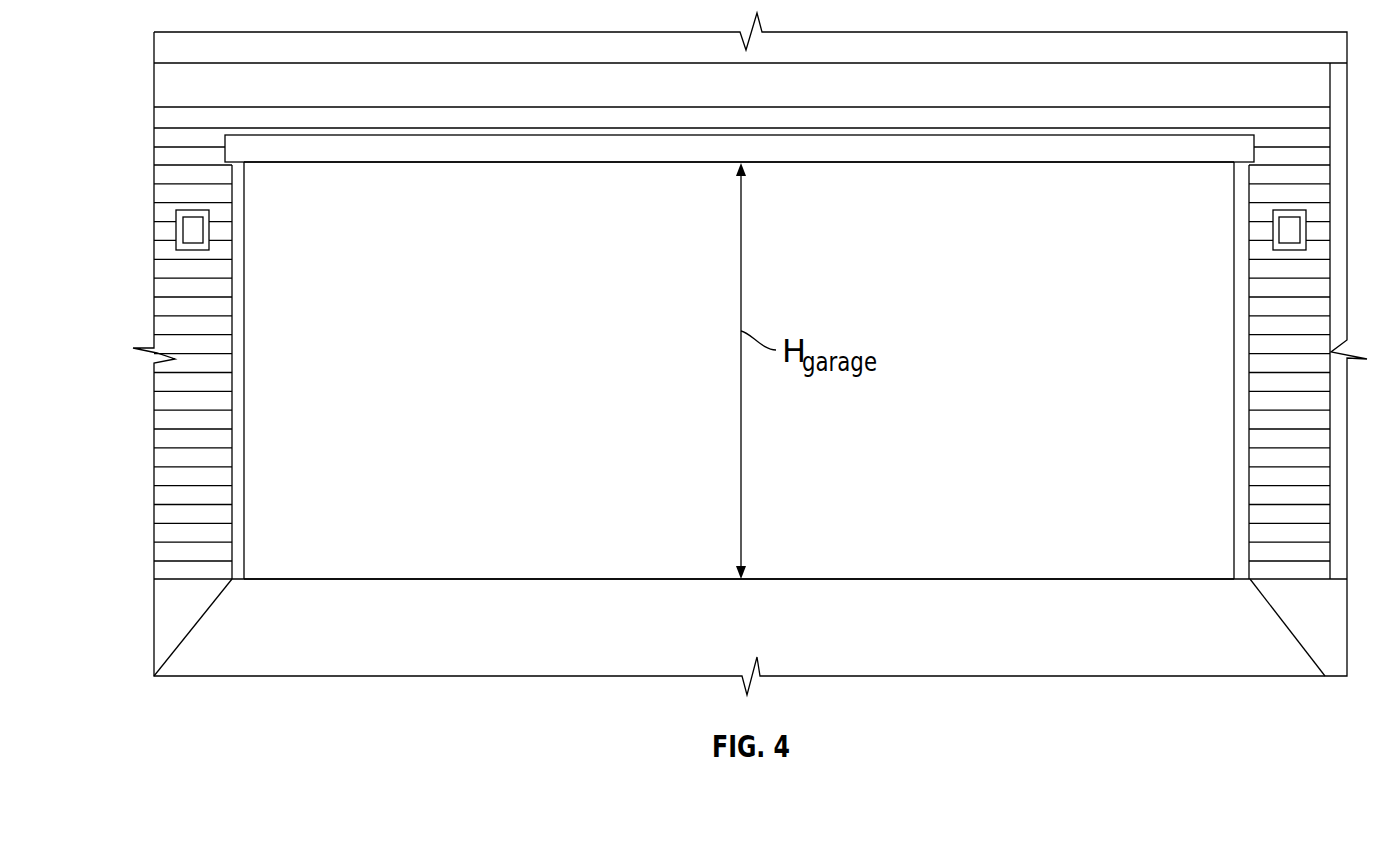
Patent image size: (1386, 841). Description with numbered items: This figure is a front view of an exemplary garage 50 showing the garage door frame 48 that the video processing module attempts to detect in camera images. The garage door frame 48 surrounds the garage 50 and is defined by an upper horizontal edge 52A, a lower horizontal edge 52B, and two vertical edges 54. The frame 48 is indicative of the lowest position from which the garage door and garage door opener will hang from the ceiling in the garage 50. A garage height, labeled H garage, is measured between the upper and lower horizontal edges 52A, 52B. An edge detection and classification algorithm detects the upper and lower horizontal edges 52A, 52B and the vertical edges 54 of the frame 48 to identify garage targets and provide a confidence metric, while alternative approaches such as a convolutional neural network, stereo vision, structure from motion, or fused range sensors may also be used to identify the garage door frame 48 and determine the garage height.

The garage door frame 48 is at (911, 147).
The garage 50 is at (818, 155).
The upper horizontal edge 52A is at (1025, 163).
The lower horizontal edge 52B is at (1025, 578).
The vertical edges 54 is at (237, 358).